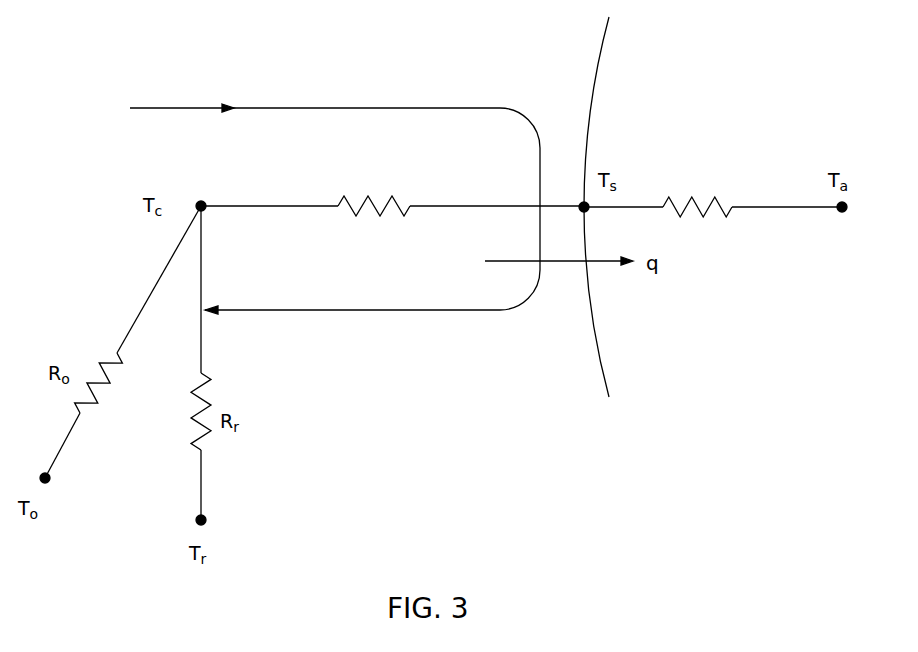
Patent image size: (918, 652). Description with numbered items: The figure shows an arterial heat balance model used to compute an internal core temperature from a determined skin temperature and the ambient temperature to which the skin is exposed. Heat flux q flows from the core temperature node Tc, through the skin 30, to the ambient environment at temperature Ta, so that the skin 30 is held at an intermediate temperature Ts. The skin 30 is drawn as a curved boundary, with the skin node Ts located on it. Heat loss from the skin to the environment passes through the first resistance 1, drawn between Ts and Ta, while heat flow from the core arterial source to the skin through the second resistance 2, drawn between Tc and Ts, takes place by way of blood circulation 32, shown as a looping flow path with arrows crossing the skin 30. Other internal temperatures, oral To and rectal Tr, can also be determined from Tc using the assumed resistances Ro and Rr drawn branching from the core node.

The skin 30 is at (605, 367).
The blood circulation 32 is at (415, 108).
The resistance R1 1 is at (713, 226).
The resistance R2 2 is at (392, 225).